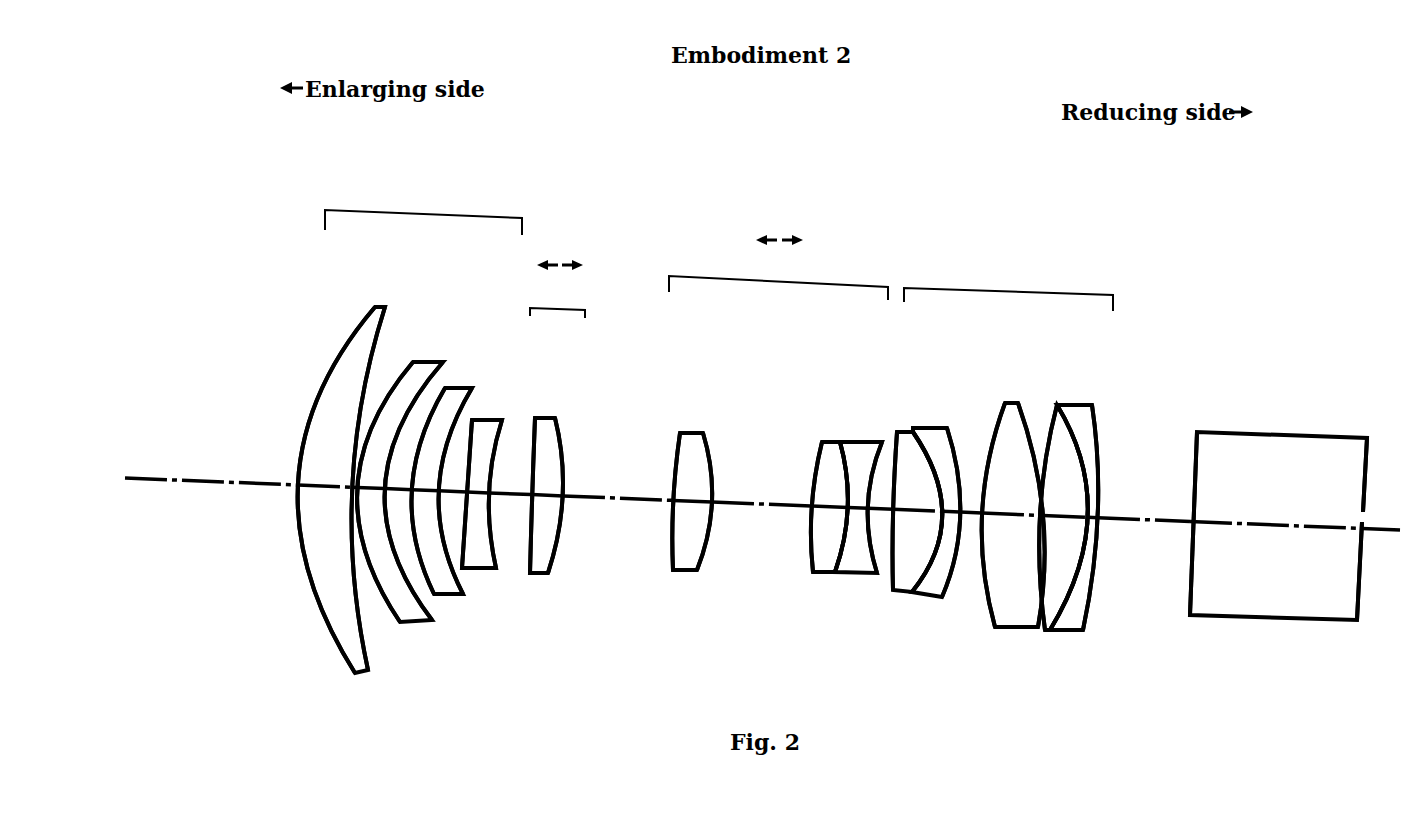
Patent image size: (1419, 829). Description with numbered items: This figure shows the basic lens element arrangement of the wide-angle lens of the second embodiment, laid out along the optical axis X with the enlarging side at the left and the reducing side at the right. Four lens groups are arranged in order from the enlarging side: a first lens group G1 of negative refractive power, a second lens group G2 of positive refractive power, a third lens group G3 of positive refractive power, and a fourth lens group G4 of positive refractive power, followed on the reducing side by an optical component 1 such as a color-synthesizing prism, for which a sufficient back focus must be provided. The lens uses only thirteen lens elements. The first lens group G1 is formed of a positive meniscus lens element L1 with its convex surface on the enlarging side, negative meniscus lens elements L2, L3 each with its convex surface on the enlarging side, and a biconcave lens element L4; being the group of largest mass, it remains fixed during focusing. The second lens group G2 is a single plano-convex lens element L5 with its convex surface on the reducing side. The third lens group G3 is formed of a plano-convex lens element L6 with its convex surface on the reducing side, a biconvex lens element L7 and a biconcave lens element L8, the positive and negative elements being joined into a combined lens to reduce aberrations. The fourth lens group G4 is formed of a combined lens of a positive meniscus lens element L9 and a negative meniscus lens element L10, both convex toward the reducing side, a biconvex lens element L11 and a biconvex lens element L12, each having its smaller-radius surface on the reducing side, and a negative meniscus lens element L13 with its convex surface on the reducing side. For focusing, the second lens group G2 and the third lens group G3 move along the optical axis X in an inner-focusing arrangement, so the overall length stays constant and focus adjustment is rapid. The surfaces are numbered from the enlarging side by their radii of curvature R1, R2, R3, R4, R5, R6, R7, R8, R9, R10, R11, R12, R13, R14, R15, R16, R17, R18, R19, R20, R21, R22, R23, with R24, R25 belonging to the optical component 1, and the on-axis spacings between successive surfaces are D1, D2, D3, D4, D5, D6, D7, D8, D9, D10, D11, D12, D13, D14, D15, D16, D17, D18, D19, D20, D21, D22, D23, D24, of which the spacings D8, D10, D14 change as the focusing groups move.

The optical axis X is at (238, 485).
The optical component 1 is at (1303, 431).
The first lens group G1 is at (423, 204).
The second lens group G2 is at (557, 289).
The third lens group G3 is at (778, 267).
The fourth lens group G4 is at (1008, 285).
The positive meniscus lens element L1 is at (383, 304).
The negative meniscus lens element L2 is at (426, 361).
The negative meniscus lens element L3 is at (461, 387).
The biconcave lens element L4 is at (490, 419).
The plano-convex lens element L5 is at (546, 417).
The plano-convex lens element L6 is at (690, 432).
The biconvex lens element L7 is at (830, 441).
The biconcave lens element L8 is at (862, 441).
The positive meniscus lens element L9 is at (904, 431).
The negative meniscus lens element L10 is at (935, 427).
The biconvex lens element L11 is at (1010, 402).
The biconvex lens element L12 is at (1060, 404).
The negative meniscus lens element L13 is at (1082, 404).
The radius of curvature of first surface R1 is at (320, 620).
The radius of curvature of second surface R2 is at (368, 660).
The radius of curvature of third surface R3 is at (392, 620).
The radius of curvature of fourth surface R4 is at (433, 600).
The radius of curvature of fifth surface R5 is at (463, 595).
The radius of curvature of sixth surface R6 is at (445, 478).
The radius of curvature of seventh surface R7 is at (475, 448).
The radius of curvature of eighth surface R8 is at (497, 463).
The radius of curvature of ninth surface R9 is at (532, 530).
The radius of curvature of tenth surface R10 is at (549, 574).
The radius of curvature of eleventh surface R11 is at (674, 569).
The radius of curvature of twelfth surface R12 is at (700, 563).
The radius of curvature of thirteenth surface R13 is at (814, 572).
The radius of curvature of fourteenth surface R14 is at (838, 575).
The radius of curvature of fifteenth surface R15 is at (870, 462).
The radius of curvature of sixteenth surface R16 is at (893, 590).
The radius of curvature of seventeenth surface R17 is at (922, 588).
The radius of curvature of eighteenth surface R18 is at (957, 452).
The radius of curvature of nineteenth surface R19 is at (991, 625).
The radius of curvature of twentieth surface R20 is at (1028, 424).
The radius of curvature of twenty-first surface R21 is at (1043, 445).
The radius of curvature of twenty-second surface R22 is at (1087, 468).
The radius of curvature of twenty-third surface R23 is at (1097, 558).
The radius of curvature of twenty-fourth surface R24 is at (1190, 597).
The radius of curvature of twenty-fifth surface R25 is at (1360, 597).
The on-axis spacing between first and second surfaces D1 is at (328, 487).
The on-axis spacing between second and third surfaces D2 is at (355, 490).
The on-axis spacing between third and fourth surfaces D3 is at (372, 491).
The on-axis spacing between fourth and fifth surfaces D4 is at (398, 501).
The on-axis spacing between fifth and sixth surfaces D5 is at (426, 492).
The on-axis spacing between sixth and seventh surfaces D6 is at (453, 503).
The on-axis spacing between seventh and eighth surfaces D7 is at (478, 494).
The on-axis spacing between eighth and ninth surfaces D8 is at (510, 506).
The on-axis spacing between ninth and tenth surfaces D9 is at (547, 496).
The on-axis spacing between tenth and eleventh surfaces D10 is at (618, 511).
The on-axis spacing between eleventh and twelfth surfaces D11 is at (692, 513).
The on-axis spacing between twelfth and thirteenth surfaces D12 is at (762, 516).
The on-axis spacing between thirteenth and fourteenth surfaces D13 is at (835, 513).
The on-axis spacing between fourteenth and fifteenth surfaces D14 is at (850, 510).
The on-axis spacing between fifteenth and sixteenth surfaces D15 is at (881, 519).
The on-axis spacing between sixteenth and seventeenth surfaces D16 is at (917, 522).
The on-axis spacing between seventeenth and eighteenth surfaces D17 is at (940, 518).
The on-axis spacing between eighteenth and nineteenth surfaces D18 is at (951, 514).
The on-axis spacing between nineteenth and twentieth surfaces D19 is at (1012, 525).
The on-axis spacing between twentieth and twenty-first surfaces D20 is at (1040, 520).
The on-axis spacing between twenty-first and twenty-second surfaces D21 is at (1065, 529).
The on-axis spacing between twenty-second and twenty-third surfaces D22 is at (1093, 520).
The on-axis spacing between twenty-third and twenty-fourth surfaces D23 is at (1144, 531).
The on-axis spacing between twenty-fourth and twenty-fifth surfaces D24 is at (1276, 537).